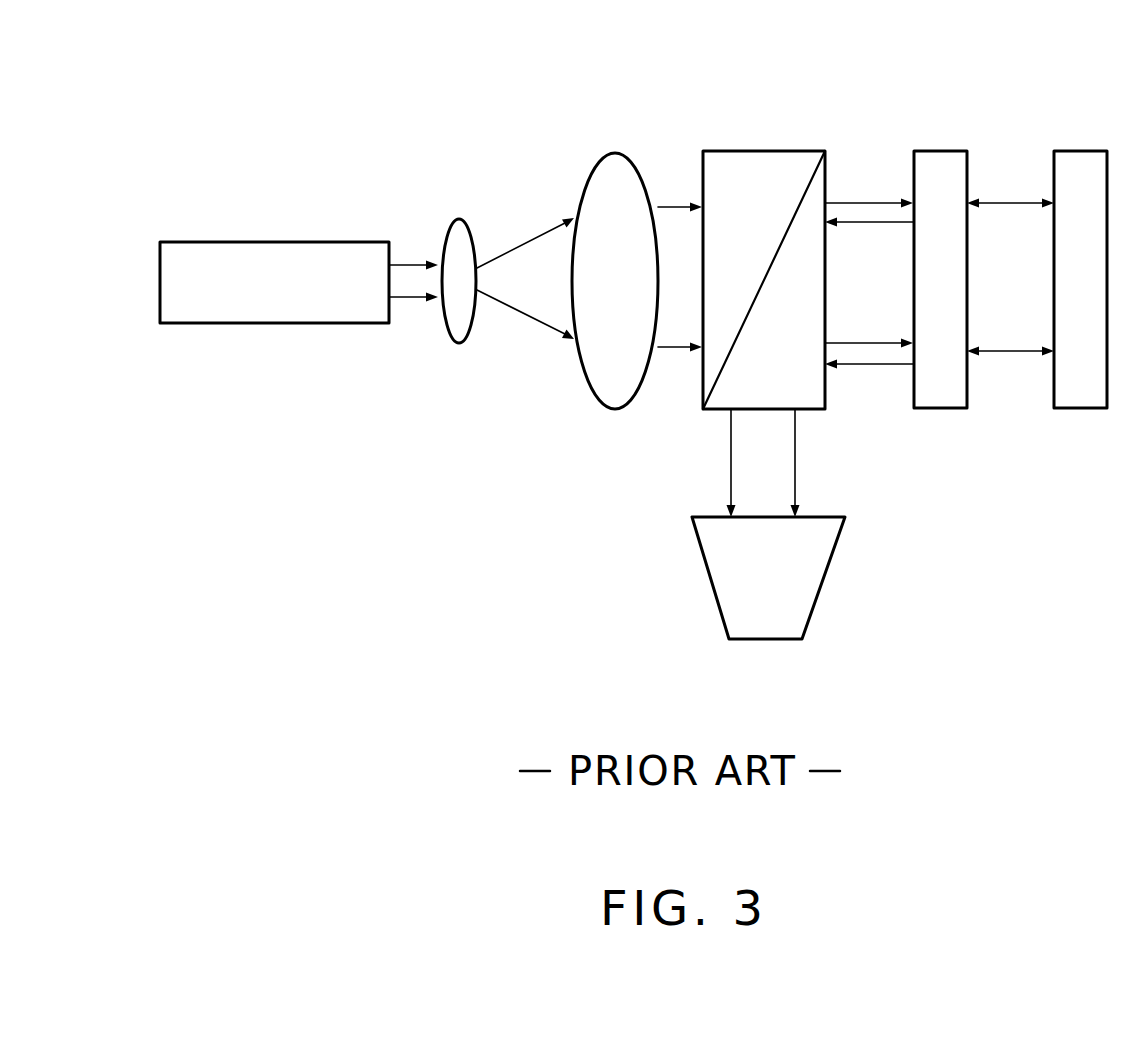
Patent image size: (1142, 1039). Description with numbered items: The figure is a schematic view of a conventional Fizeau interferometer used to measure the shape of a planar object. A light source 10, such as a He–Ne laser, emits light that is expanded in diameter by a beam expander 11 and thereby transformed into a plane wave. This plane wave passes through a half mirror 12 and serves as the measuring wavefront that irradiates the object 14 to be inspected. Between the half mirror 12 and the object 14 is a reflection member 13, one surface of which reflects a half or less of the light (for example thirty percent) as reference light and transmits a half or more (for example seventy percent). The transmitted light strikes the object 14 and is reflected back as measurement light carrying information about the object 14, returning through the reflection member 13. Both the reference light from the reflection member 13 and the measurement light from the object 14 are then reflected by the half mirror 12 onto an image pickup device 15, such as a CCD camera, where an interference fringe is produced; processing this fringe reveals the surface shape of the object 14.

The light source 10 is at (297, 315).
The beam expander 11 is at (653, 412).
The half mirror 12 is at (818, 188).
The reflection member 13 is at (937, 390).
The object 14 is at (1075, 160).
The image pickup device 15 is at (803, 597).